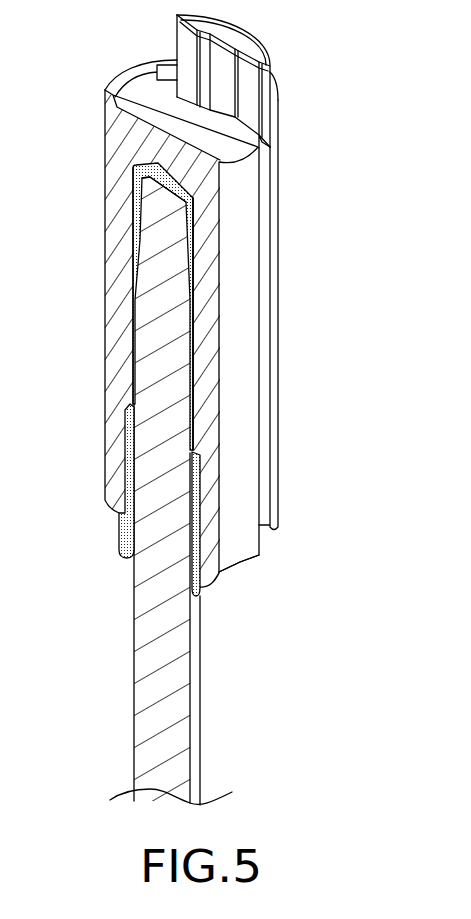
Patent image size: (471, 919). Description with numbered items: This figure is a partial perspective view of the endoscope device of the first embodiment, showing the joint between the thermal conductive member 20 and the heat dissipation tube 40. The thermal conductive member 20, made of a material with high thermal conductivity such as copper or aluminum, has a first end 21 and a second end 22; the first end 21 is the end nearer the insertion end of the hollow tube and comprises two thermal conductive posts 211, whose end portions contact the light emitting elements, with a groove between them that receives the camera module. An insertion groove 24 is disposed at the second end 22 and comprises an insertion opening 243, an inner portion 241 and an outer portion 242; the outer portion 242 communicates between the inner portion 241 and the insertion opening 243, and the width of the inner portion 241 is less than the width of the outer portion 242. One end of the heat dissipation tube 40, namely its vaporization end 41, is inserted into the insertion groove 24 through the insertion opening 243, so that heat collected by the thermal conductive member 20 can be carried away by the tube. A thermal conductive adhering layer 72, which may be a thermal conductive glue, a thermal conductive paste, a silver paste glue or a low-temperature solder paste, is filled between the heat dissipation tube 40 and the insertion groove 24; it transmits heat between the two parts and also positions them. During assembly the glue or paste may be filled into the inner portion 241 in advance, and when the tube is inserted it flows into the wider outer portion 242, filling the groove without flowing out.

The thermal conductive member 20 is at (279, 207).
The first end 21 is at (250, 160).
The thermal conductive posts 211 is at (247, 72).
The second end 22 is at (243, 563).
The insertion groove 24 is at (352, 240).
The inner portion 241 is at (194, 249).
The outer portion 242 is at (201, 472).
The insertion opening 243 is at (120, 522).
The heat dissipation tube 40 is at (133, 600).
The vaporization end 41 is at (162, 200).
The thermal conductive adhering layer 72 is at (145, 231).